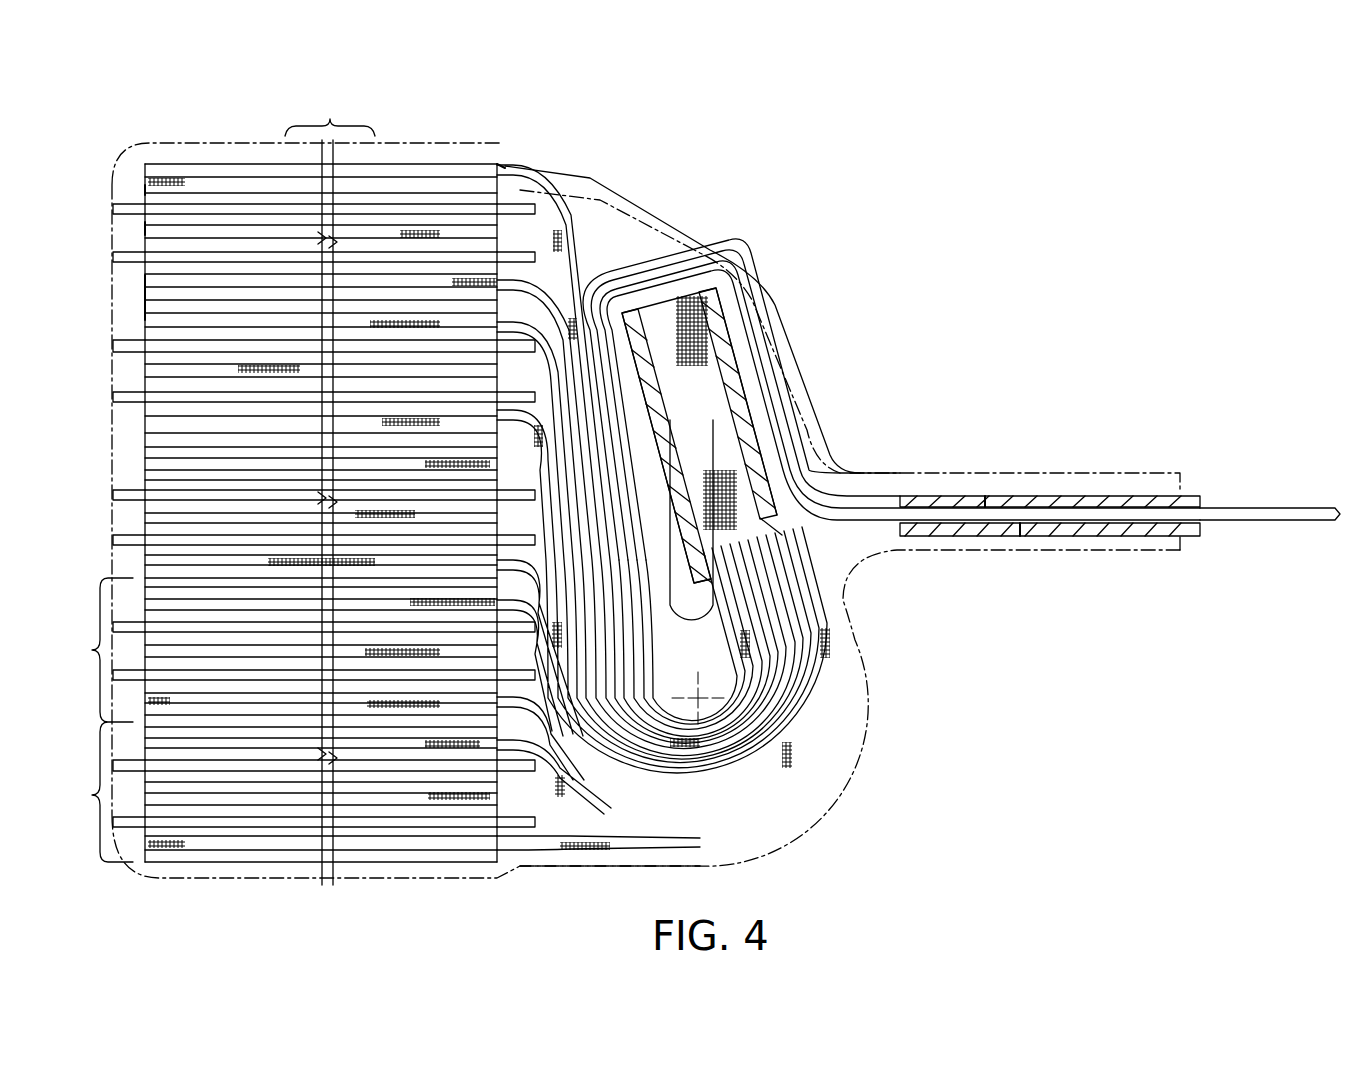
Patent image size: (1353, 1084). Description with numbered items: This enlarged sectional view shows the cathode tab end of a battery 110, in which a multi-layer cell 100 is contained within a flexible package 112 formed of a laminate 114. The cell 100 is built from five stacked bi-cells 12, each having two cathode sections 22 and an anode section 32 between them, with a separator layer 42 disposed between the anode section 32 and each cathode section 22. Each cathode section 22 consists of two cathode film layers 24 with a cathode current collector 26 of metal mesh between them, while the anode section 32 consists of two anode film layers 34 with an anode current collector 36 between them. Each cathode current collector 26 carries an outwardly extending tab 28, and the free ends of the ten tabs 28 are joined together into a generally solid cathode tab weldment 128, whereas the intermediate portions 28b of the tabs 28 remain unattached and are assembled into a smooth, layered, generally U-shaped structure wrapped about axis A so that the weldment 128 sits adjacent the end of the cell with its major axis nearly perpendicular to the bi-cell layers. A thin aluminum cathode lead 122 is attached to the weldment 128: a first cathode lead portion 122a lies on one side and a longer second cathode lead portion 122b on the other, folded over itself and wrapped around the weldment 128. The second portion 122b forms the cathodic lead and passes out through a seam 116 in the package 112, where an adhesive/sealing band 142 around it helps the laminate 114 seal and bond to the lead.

The bi-cell 12 is at (94, 720).
The cathode section 22 is at (126, 192).
The cathode film layer 24 is at (240, 238).
The cathode current collector 26 is at (215, 180).
The cathode current collector tab 28 is at (840, 712).
The intermediate portion of cathode current collector tab 28b is at (555, 340).
The anode section 32 is at (128, 232).
The anode film layer 34 is at (256, 243).
The anode current collector 36 is at (178, 232).
The separator layer 42 is at (107, 396).
The cell 100 is at (517, 172).
The battery 110 is at (823, 183).
The flexible package 112 is at (663, 204).
The laminate 114 is at (620, 188).
The seam 116 is at (1128, 465).
The cathode lead 122 is at (1274, 495).
The first cathode lead portion 122a is at (730, 360).
The second cathode lead portion 122b is at (655, 365).
The cathode tab weldment 128 is at (710, 440).
The adhesive/sealing band 142 is at (1020, 530).